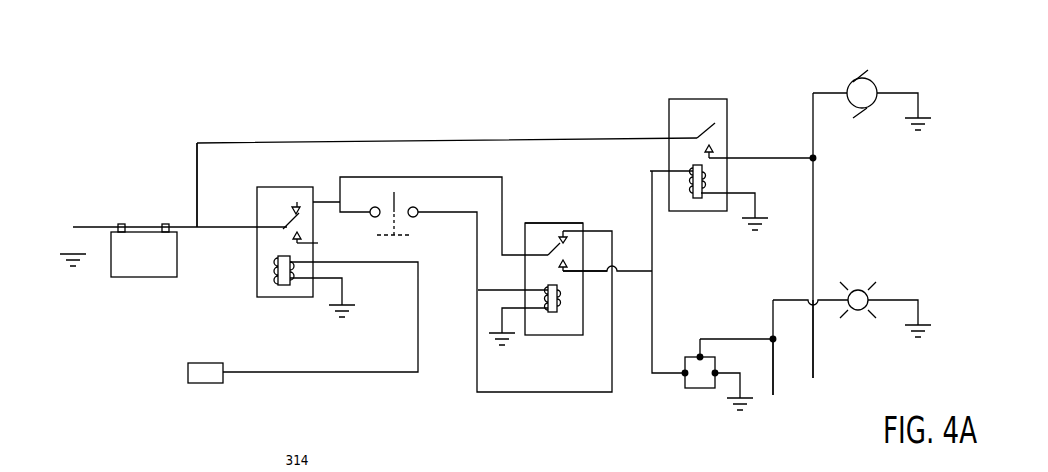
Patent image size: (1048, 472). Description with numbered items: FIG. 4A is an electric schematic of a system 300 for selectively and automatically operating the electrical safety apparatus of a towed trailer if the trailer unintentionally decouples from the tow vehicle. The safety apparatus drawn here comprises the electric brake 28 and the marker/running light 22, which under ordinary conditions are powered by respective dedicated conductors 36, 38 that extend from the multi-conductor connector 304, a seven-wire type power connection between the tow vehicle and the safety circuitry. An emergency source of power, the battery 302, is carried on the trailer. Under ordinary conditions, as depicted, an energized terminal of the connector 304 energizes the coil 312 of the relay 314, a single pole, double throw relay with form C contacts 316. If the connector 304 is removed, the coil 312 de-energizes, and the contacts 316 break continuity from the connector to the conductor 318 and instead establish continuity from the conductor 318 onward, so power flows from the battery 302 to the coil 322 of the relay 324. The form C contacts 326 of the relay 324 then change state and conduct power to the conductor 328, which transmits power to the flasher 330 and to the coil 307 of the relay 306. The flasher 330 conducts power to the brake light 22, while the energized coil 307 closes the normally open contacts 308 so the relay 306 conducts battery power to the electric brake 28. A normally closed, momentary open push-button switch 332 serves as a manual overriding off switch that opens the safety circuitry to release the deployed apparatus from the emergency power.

The marker/running light 22 is at (856, 312).
The electric brake 28 is at (875, 80).
The dedicated conductor 36 is at (815, 363).
The dedicated conductor 38 is at (777, 378).
The system 300 is at (948, 192).
The battery 302 is at (116, 278).
The multi-conductor connector 304 is at (207, 387).
The relay 306 is at (705, 99).
The coil 307 is at (703, 199).
The normally open contacts 308 is at (720, 136).
The coil 312 is at (280, 297).
The relay 314 is at (288, 187).
The form C contacts 316 is at (281, 232).
The conductor 318 is at (237, 222).
The coil 322 is at (551, 331).
The relay 324 is at (545, 221).
The form C contacts 326 is at (577, 252).
The conductor 328 is at (590, 273).
The flasher 330 is at (700, 389).
The push-button switch 332 is at (423, 235).